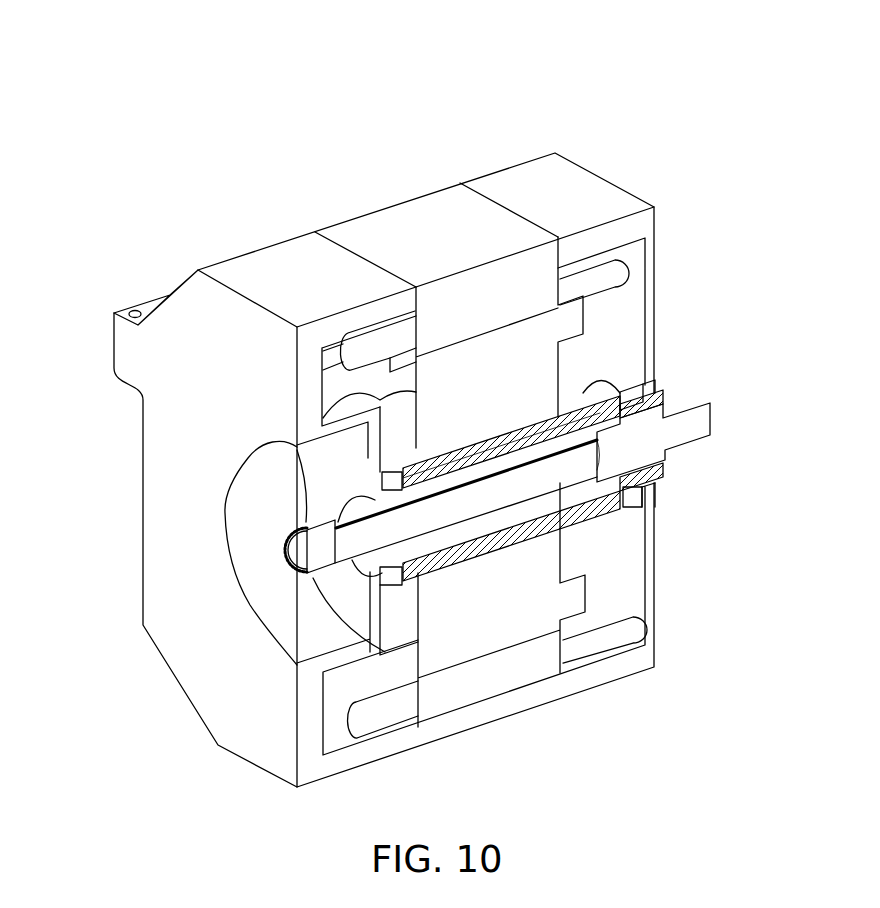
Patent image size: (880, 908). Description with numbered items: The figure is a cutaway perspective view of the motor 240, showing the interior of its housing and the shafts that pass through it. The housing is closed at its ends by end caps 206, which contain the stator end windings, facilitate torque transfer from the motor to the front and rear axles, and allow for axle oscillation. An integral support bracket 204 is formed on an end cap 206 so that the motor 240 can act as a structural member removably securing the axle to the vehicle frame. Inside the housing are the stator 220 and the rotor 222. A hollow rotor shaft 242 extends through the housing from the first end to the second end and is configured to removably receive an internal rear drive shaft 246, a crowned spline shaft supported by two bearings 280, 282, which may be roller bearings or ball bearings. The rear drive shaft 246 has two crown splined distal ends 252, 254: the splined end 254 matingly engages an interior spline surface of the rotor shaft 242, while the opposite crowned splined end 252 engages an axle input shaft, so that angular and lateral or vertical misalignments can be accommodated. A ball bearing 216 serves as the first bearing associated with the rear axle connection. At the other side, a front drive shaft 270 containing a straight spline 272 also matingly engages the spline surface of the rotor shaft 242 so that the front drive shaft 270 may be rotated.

The motor 240 is at (222, 72).
The support bracket 204 is at (112, 322).
The end cap 206 is at (210, 263).
The stator 220 is at (525, 275).
The rotor 222 is at (560, 325).
The crown splined distal end 254 is at (557, 417).
The rear drive shaft 246 is at (463, 507).
The hollow rotor shaft 242 is at (585, 520).
The crown splined distal end 252 is at (292, 535).
The bearing 280 is at (380, 600).
The ball bearing 216 is at (632, 496).
The bearing 282 is at (640, 502).
The front drive shaft 270 is at (690, 428).
The straight spline 272 is at (640, 437).